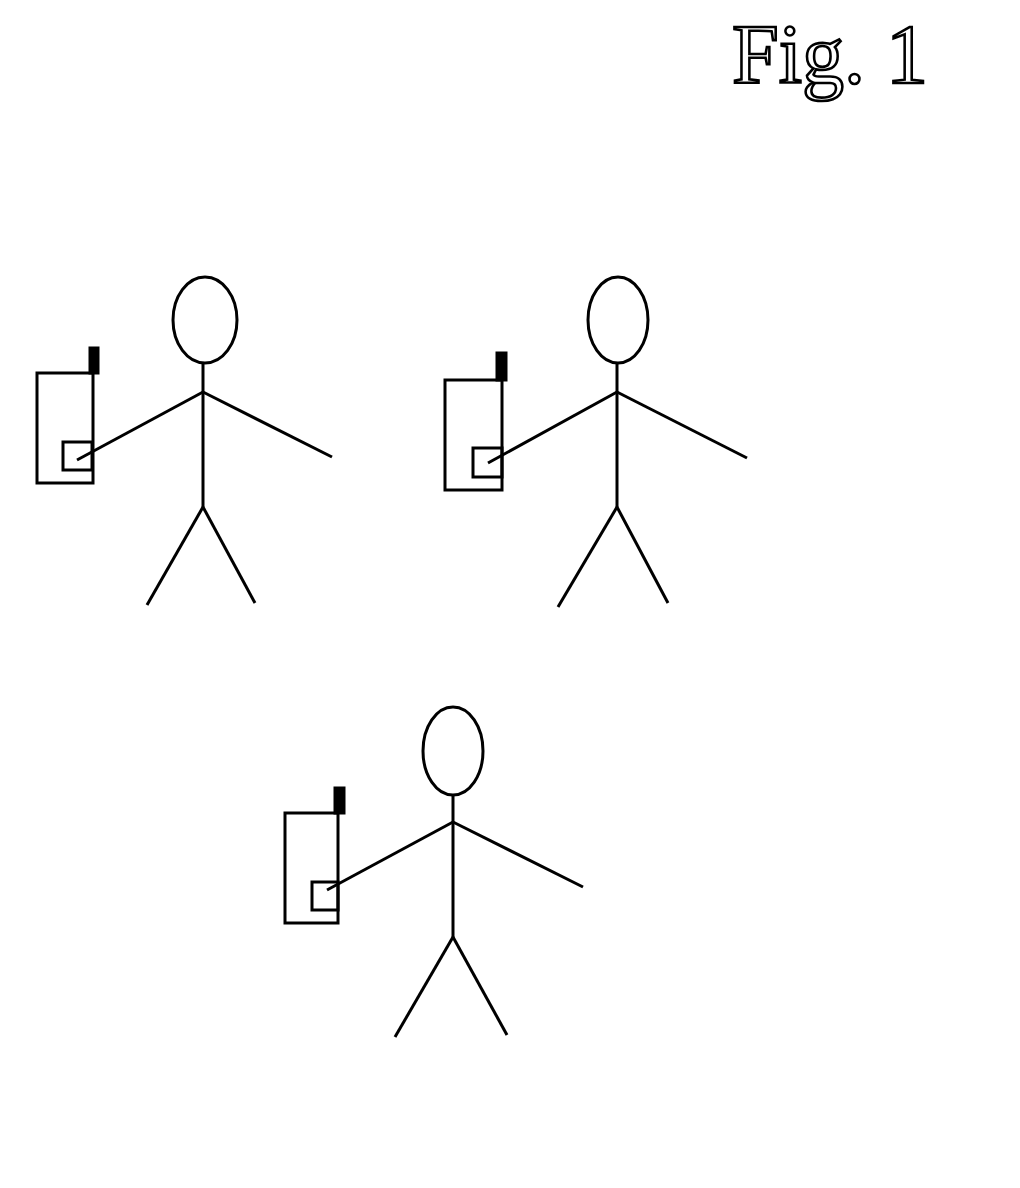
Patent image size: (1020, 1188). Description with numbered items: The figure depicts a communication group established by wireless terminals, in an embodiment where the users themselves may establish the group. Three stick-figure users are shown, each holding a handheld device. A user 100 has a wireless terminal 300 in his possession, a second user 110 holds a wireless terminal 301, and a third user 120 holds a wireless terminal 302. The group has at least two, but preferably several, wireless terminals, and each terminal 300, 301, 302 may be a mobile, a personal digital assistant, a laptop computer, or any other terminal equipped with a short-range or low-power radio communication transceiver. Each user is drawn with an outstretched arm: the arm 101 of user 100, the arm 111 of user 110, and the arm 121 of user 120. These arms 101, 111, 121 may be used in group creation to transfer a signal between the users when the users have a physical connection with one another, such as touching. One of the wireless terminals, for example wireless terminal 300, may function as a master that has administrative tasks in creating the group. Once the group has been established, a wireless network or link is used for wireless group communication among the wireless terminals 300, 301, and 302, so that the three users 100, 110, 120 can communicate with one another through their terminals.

The user 100 is at (166, 420).
The arm 101 is at (267, 422).
The wireless terminal 300 is at (67, 441).
The user 110 is at (578, 424).
The arm 111 is at (682, 420).
The wireless terminal 301 is at (474, 446).
The user 120 is at (417, 851).
The arm 121 is at (518, 852).
The wireless terminal 302 is at (313, 880).